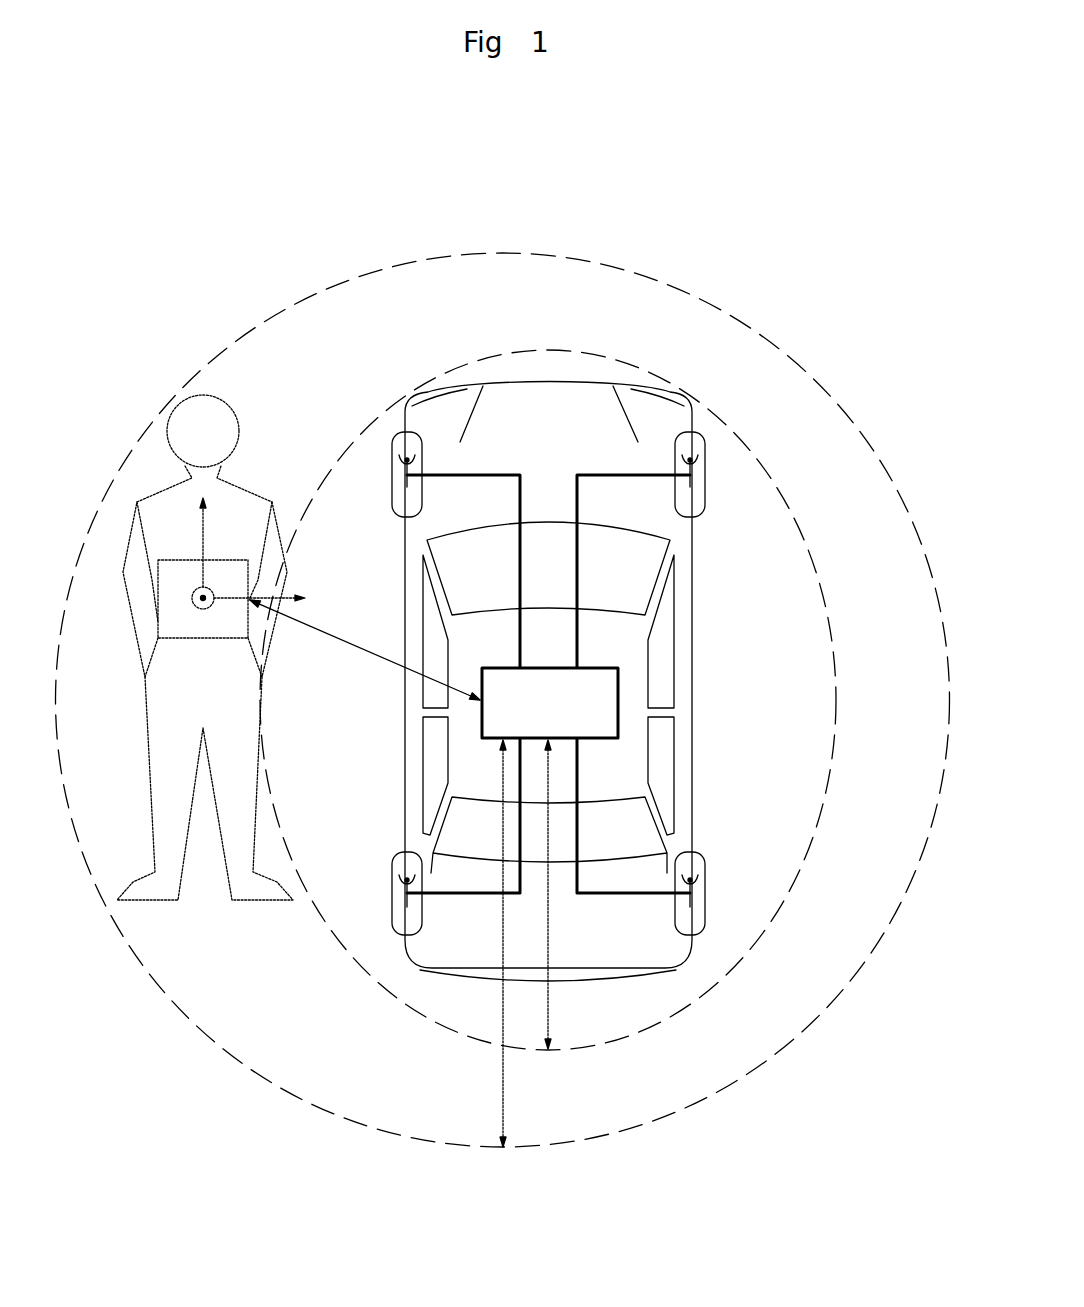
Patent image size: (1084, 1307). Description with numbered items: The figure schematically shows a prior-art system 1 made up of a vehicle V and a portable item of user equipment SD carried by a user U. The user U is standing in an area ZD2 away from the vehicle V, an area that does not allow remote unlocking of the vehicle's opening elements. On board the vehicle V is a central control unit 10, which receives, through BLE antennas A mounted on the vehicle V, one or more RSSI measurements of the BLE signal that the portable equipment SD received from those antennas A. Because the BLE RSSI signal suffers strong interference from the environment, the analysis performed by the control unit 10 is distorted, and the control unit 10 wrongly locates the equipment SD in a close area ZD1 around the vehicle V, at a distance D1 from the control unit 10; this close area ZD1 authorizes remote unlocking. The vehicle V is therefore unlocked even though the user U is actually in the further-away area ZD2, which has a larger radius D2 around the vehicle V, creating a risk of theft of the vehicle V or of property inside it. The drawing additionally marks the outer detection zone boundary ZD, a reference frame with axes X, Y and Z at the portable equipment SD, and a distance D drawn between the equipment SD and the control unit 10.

The system 1 is at (308, 220).
The central control unit 10 is at (583, 702).
The BLE antennas A is at (395, 450).
The vehicle V is at (550, 380).
The detection zone ZD is at (762, 331).
The close area ZD1 is at (668, 1025).
The further-away area ZD2 is at (657, 285).
The user U is at (183, 428).
The portable item of user equipment SD is at (170, 628).
The X axis X is at (264, 584).
The Y axis Y is at (191, 594).
The Z axis Z is at (191, 540).
The distance between device and control unit D is at (365, 650).
The distance D1 is at (567, 894).
The radius D2 is at (484, 943).